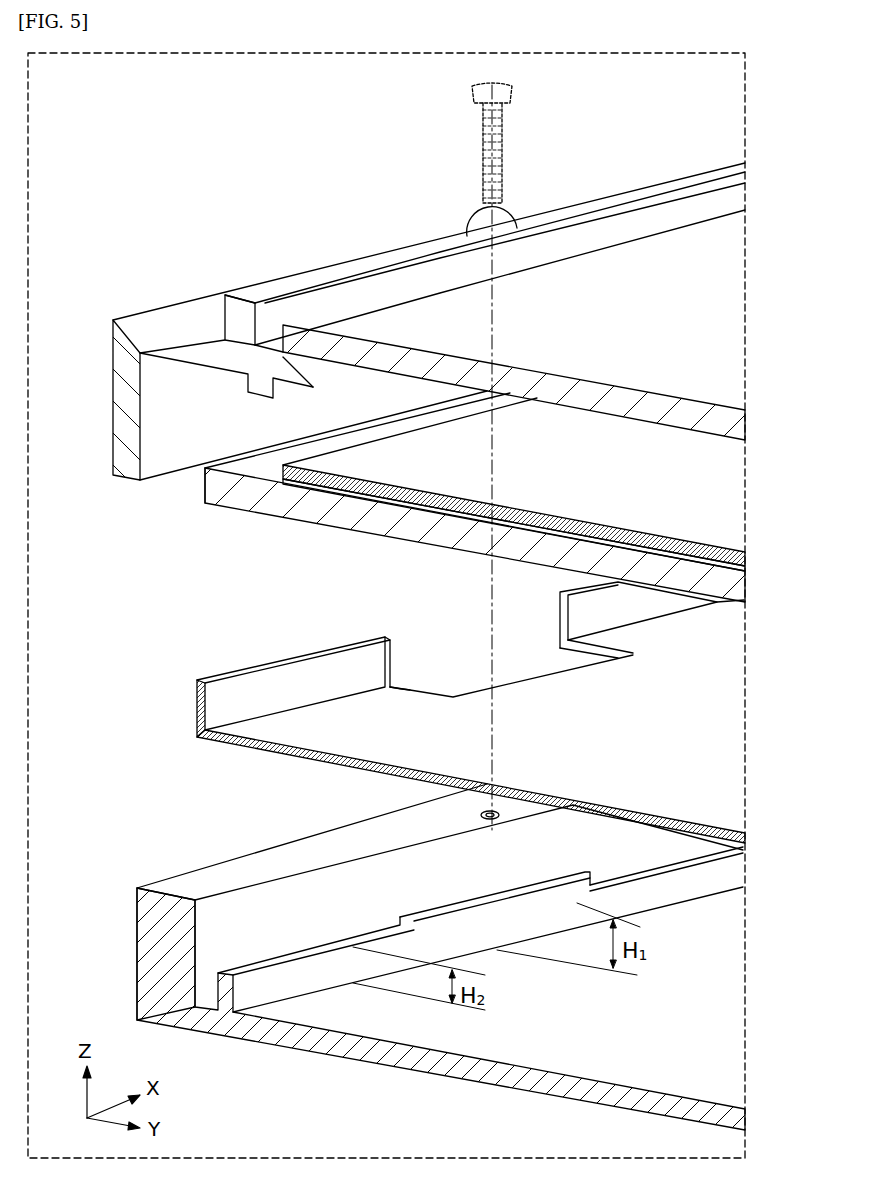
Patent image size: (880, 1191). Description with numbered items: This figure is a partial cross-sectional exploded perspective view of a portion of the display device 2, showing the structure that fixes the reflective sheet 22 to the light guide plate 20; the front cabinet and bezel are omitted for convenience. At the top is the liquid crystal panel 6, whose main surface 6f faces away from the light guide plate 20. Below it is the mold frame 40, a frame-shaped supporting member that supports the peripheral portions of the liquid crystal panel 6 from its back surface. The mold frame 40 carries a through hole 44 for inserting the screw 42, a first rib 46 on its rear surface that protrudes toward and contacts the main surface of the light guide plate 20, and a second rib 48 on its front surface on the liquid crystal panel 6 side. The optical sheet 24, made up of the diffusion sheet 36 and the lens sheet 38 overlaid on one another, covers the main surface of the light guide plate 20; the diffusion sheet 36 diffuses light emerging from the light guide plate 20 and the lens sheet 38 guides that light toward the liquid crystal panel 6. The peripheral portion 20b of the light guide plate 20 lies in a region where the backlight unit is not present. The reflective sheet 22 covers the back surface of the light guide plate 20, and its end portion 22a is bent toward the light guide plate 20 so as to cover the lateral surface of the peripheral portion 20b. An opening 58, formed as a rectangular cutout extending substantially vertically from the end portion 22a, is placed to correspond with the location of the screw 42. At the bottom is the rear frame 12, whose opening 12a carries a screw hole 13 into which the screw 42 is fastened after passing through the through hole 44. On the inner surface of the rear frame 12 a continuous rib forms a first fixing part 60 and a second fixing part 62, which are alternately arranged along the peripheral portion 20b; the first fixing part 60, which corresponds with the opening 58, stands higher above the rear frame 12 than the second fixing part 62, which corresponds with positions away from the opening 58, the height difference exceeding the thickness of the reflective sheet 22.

The display device 2 is at (188, 142).
The liquid crystal panel 6 is at (425, 314).
The main surface 6f is at (730, 348).
The rear frame 12 is at (441, 961).
The opening 12a is at (185, 888).
The screw hole 13 is at (480, 813).
The light guide plate 20 is at (475, 497).
The peripheral portion 20b is at (234, 497).
The reflective sheet 22 is at (457, 710).
The end portion 22a is at (236, 690).
The optical sheet 24 is at (572, 489).
The diffusion sheet 36 is at (735, 572).
The lens sheet 38 is at (730, 546).
The mold frame 40 is at (120, 342).
The screw 42 is at (508, 131).
The through hole 44 is at (504, 226).
The first rib 46 is at (225, 372).
The second rib 48 is at (300, 292).
The opening 58 is at (415, 680).
The first fixing part 60 is at (428, 906).
The second fixing part 62 is at (286, 986).